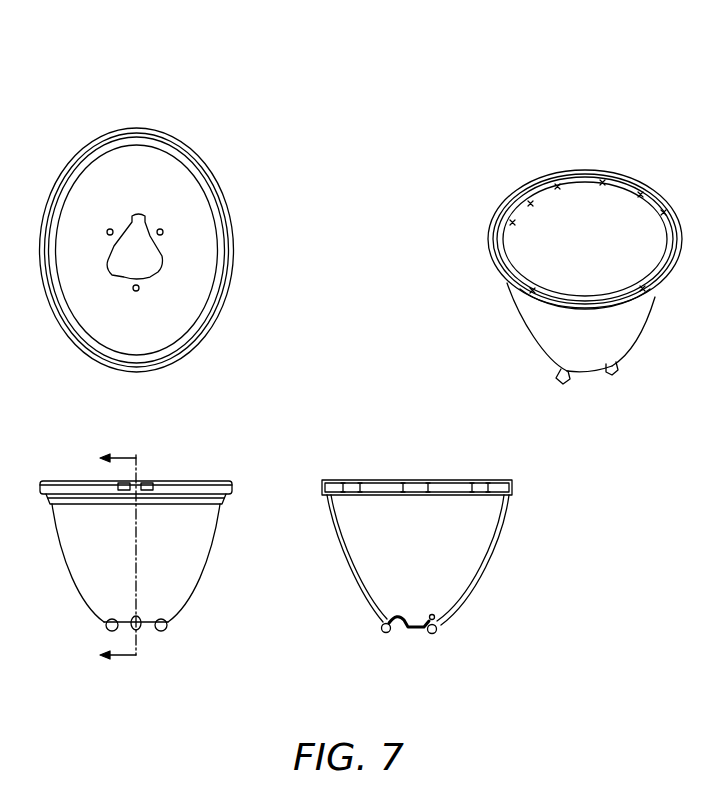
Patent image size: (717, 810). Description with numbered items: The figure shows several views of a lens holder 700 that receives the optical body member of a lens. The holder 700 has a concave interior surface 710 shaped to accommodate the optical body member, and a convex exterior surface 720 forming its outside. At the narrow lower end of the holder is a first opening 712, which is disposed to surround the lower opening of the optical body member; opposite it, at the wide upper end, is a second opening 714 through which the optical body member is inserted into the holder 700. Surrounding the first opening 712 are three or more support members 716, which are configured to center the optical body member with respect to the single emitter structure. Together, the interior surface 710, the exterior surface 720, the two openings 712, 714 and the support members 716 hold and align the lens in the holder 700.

The holder 700 is at (392, 142).
The concave interior surface 710 is at (350, 548).
The first opening 712 is at (147, 265).
The second opening 714 is at (470, 482).
The support members 716 is at (383, 624).
The convex exterior surface 720 is at (482, 563).